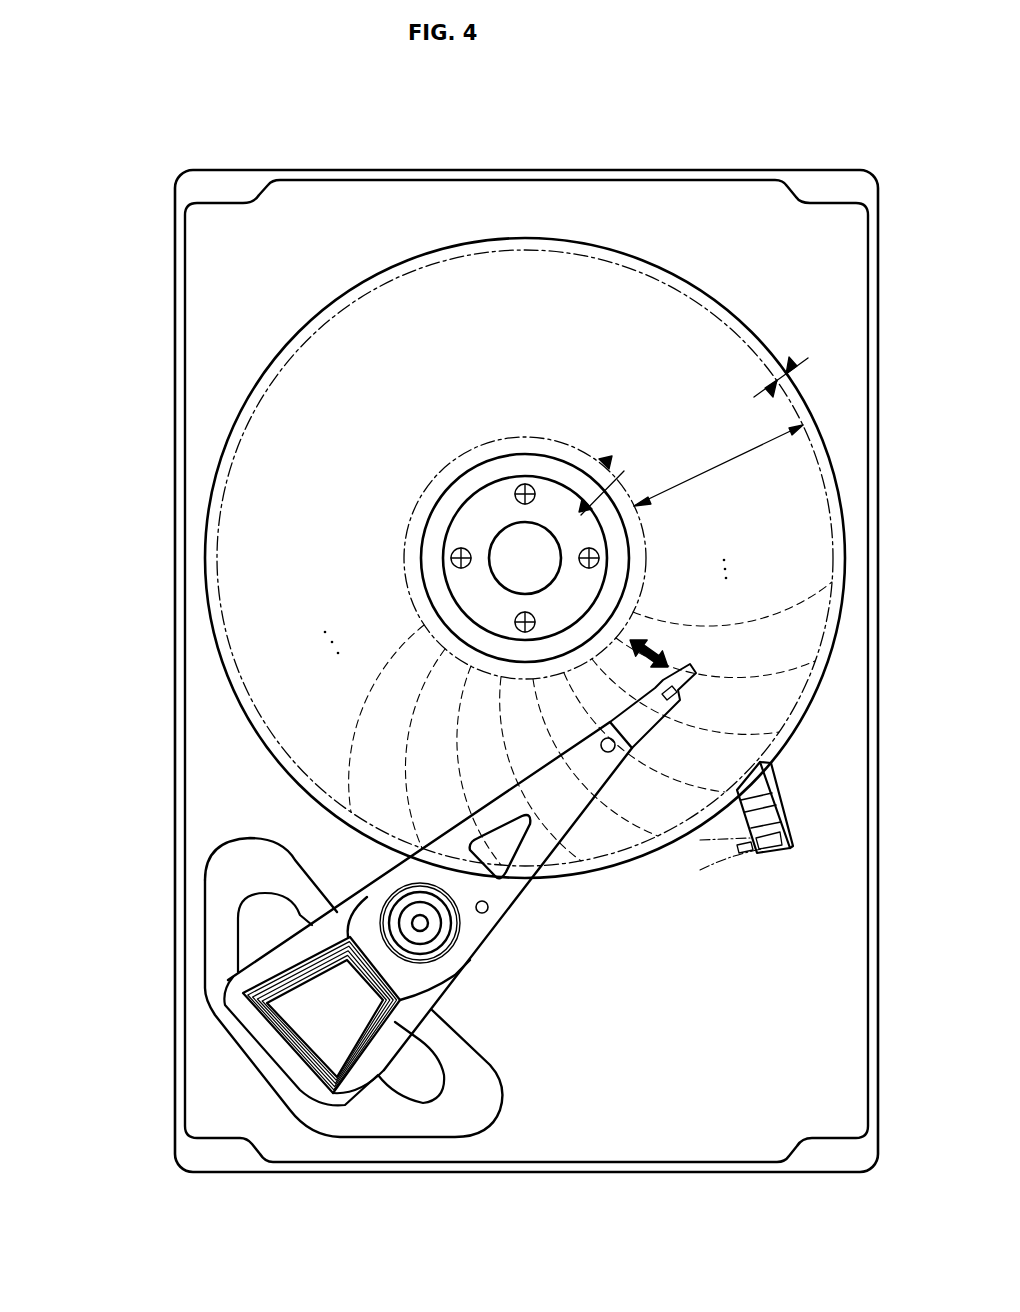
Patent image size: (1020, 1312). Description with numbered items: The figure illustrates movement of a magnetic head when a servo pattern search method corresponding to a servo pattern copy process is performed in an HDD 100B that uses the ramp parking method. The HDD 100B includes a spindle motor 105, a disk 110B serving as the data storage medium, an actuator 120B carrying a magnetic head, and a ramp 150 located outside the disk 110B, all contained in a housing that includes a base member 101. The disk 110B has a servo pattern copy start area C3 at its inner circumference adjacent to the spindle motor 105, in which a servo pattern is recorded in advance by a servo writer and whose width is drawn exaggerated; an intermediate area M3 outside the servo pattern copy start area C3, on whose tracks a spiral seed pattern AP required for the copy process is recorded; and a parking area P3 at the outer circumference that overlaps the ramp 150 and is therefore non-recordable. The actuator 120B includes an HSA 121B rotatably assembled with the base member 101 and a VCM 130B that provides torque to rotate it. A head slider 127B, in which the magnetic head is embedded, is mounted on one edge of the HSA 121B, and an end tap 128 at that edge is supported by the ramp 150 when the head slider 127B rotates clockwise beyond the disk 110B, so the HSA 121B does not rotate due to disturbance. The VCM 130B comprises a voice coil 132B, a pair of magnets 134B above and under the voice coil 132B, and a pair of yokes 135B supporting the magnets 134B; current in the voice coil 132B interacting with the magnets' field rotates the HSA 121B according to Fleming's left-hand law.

The HDD 100B is at (816, 155).
The base member 101 is at (178, 419).
The spindle motor 105 is at (502, 470).
The disk 110B is at (556, 238).
The actuator 120B is at (521, 1028).
The HSA 121B is at (525, 903).
The head slider 127B is at (683, 696).
The end tap 128 is at (672, 676).
The VCM 130B is at (103, 885).
The voice coil 132B is at (253, 1023).
The magnets 134B is at (253, 936).
The yokes 135B is at (215, 893).
The ramp 150 is at (790, 822).
The spiral seed pattern AP is at (350, 721).
The servo pattern copy start area C3 is at (598, 468).
The intermediate area M3 is at (718, 465).
The parking area P3 is at (777, 374).